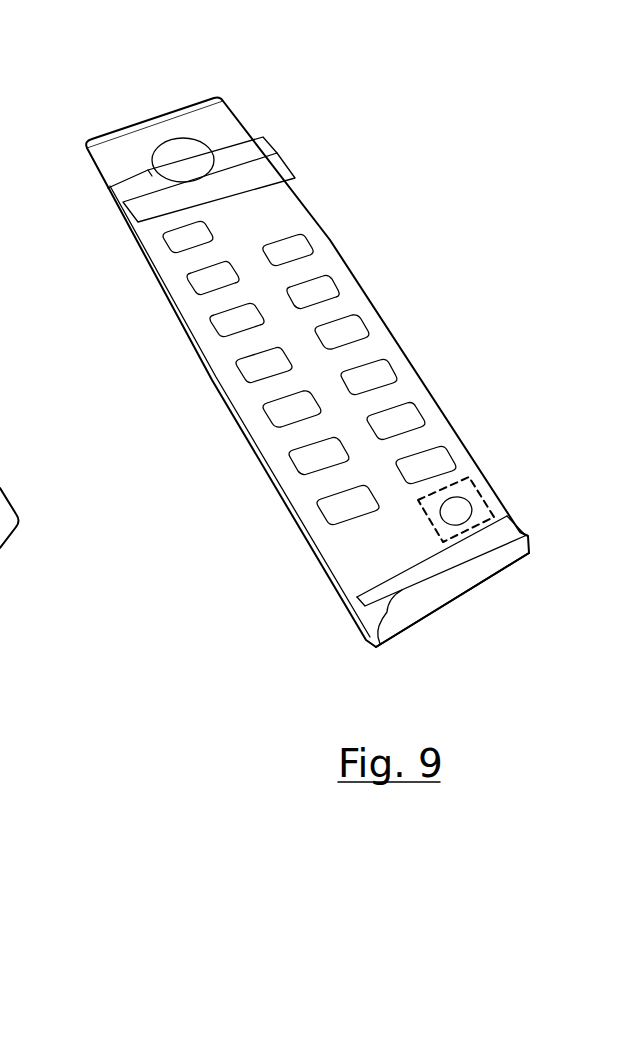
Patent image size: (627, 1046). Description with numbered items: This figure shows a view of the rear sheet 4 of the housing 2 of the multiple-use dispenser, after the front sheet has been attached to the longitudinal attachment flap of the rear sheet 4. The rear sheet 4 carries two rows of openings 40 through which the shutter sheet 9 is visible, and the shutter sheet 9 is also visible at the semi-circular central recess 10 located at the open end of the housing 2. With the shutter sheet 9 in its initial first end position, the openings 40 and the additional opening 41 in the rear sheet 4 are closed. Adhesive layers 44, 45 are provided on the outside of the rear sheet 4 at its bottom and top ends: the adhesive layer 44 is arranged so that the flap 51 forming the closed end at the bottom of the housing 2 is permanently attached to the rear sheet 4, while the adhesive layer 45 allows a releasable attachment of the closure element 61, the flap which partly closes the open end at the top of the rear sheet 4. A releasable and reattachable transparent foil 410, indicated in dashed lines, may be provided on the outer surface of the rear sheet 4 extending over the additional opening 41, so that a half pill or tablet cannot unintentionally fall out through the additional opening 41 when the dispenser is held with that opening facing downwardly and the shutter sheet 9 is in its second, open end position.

The housing 2 is at (385, 320).
The rear sheet 4 is at (324, 253).
The shutter sheet 9 is at (187, 171).
The central recess 10 is at (205, 180).
The openings 40 is at (265, 420).
The additional opening 41 is at (476, 500).
The adhesive layer 44 is at (503, 538).
The adhesive layer 45 is at (140, 213).
The flap 51 is at (483, 569).
The closure element 61 is at (229, 116).
The transparent foil 410 is at (470, 486).